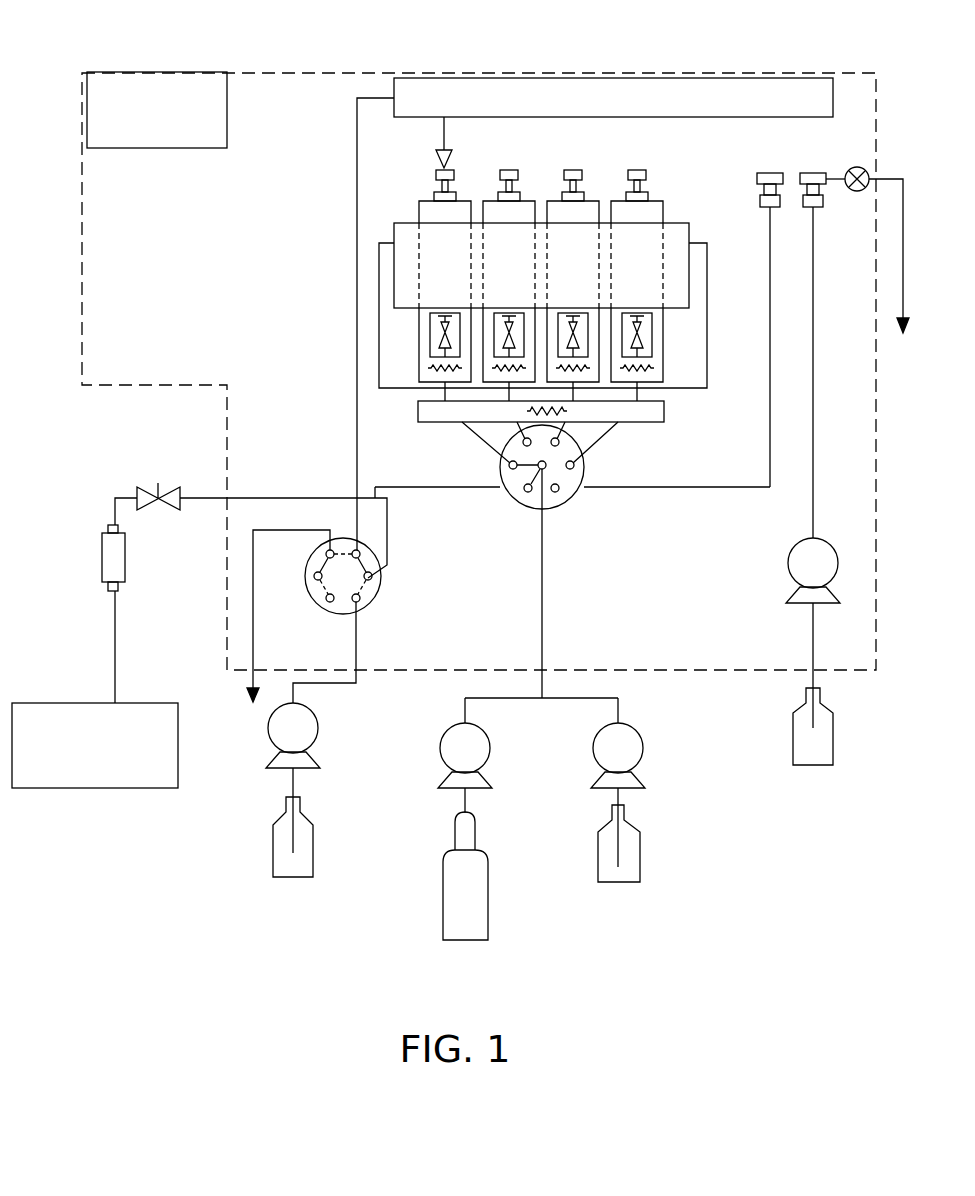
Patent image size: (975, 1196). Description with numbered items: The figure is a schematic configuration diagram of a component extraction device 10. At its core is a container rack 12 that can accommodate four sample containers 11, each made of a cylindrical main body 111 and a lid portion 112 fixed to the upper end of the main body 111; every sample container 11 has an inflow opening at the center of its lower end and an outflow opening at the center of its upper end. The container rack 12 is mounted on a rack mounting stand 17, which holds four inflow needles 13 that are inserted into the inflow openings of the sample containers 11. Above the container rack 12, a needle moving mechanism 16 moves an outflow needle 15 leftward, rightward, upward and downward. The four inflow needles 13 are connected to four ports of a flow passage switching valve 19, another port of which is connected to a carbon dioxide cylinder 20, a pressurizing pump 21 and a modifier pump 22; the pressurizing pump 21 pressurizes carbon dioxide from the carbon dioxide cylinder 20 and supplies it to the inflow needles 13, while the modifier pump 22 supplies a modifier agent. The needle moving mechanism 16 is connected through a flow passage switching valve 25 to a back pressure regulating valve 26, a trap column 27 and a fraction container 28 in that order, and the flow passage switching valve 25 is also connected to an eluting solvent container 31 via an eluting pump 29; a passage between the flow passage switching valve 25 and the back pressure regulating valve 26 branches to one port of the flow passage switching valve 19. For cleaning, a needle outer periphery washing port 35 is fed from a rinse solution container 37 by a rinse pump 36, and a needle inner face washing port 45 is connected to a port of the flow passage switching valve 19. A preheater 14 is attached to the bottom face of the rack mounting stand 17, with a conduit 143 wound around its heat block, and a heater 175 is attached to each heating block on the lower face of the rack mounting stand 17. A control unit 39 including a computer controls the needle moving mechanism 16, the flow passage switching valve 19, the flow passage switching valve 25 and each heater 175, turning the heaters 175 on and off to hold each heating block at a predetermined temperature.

The component extraction device 10 is at (297, 70).
The sample container 11 is at (480, 258).
The container rack 12 is at (689, 233).
The inflow needle 13 is at (432, 337).
The preheater 14 is at (663, 410).
The outflow needle 15 is at (450, 157).
The needle moving mechanism 16 is at (610, 77).
The rack mounting stand 17 is at (707, 278).
The flow passage switching valve 19 is at (584, 462).
The carbon dioxide cylinder 20 is at (488, 905).
The pressurizing pump 21 is at (490, 748).
The modifier pump 22 is at (645, 748).
The flow passage switching valve 25 is at (381, 577).
The back pressure regulating valve 26 is at (170, 487).
The trap column 27 is at (127, 558).
The fraction container 28 is at (180, 745).
The eluting pump 29 is at (318, 723).
The eluting solvent container 31 is at (313, 850).
The needle outer periphery washing port 35 is at (813, 172).
The rinse pump 36 is at (838, 565).
The rinse solution container 37 is at (833, 740).
The control unit 39 is at (157, 148).
The needle inner face washing port 45 is at (770, 172).
The main body 111 is at (418, 265).
The lid portion 112 is at (418, 212).
The conduit 143 is at (637, 393).
The heater 175 is at (418, 355).